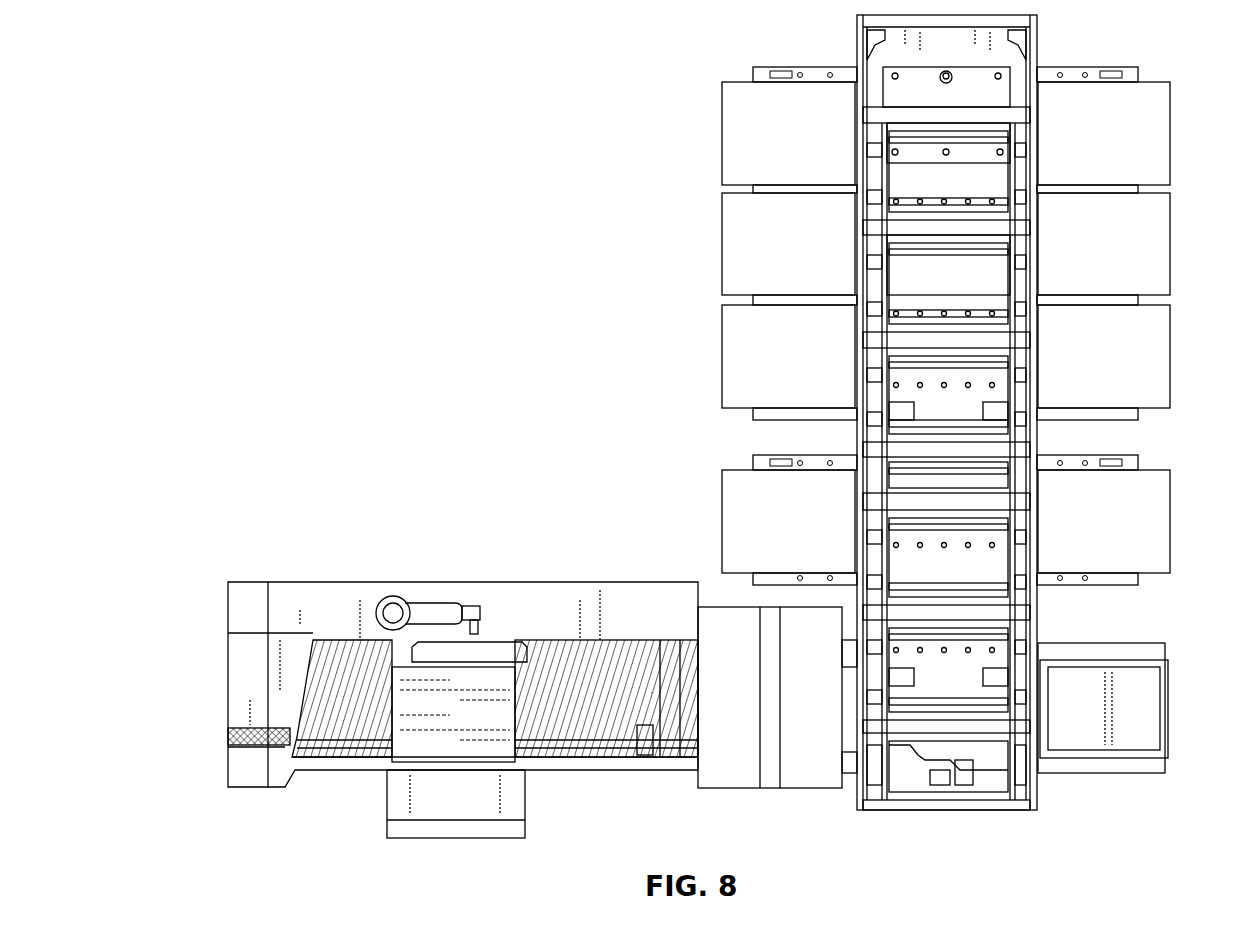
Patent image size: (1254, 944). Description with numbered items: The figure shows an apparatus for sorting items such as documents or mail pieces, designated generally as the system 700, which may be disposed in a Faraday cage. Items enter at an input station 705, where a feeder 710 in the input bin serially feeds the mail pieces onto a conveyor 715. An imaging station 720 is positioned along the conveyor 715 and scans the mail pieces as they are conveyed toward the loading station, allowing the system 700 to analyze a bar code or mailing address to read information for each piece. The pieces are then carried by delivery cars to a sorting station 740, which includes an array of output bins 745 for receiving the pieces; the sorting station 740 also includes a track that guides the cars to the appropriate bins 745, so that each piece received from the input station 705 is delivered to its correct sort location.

The item sortation apparatus 700 is at (358, 402).
The input station 705 is at (920, 777).
The feeder 710 is at (237, 715).
The conveyor 715 is at (575, 755).
The imaging station 720 is at (745, 790).
The sorting station 740 is at (1065, 29).
The output bins 745 is at (722, 130).